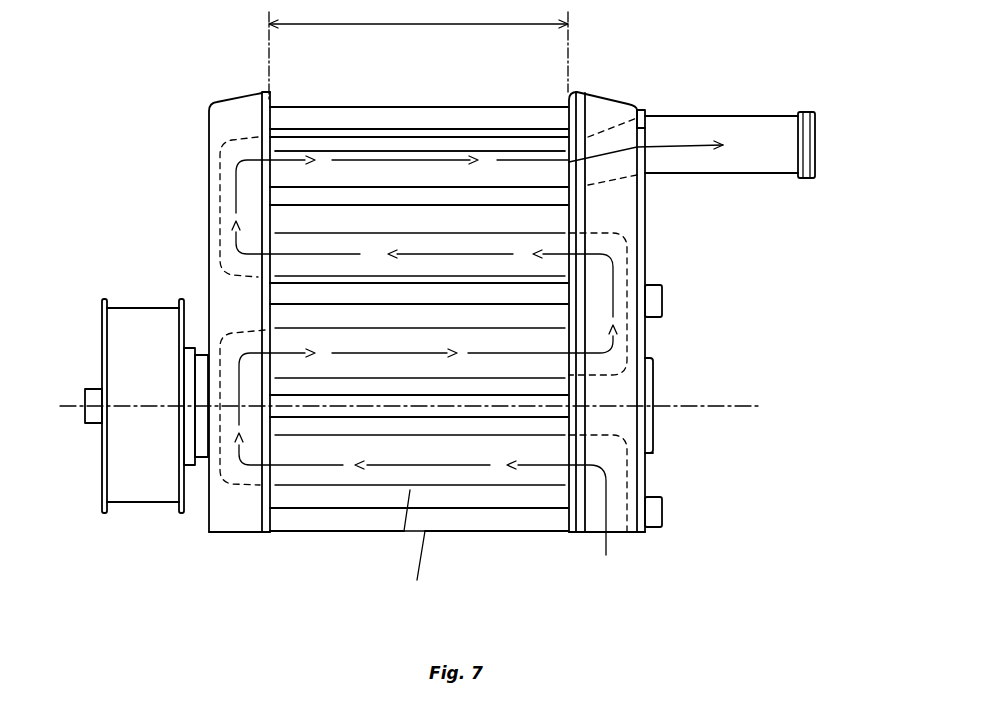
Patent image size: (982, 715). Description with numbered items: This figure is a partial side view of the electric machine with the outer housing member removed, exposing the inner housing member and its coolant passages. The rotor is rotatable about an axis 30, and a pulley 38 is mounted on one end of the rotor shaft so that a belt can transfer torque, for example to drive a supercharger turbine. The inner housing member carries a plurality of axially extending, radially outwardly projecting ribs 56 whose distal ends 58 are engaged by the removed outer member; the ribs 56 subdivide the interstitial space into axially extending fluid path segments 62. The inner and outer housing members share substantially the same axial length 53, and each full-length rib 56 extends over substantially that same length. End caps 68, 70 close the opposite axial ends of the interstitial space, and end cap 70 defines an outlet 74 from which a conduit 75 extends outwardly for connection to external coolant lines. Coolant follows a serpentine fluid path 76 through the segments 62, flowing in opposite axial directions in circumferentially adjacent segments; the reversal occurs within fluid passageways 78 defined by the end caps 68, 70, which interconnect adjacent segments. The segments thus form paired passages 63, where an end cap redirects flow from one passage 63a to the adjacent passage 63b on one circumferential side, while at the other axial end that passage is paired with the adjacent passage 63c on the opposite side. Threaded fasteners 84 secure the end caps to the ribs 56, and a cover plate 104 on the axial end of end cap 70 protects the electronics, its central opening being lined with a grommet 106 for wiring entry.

The axis 30 is at (68, 410).
The pulley 38 is at (145, 507).
The axial length 53 is at (409, 26).
The ribs 56 is at (482, 143).
The distal ends 58 is at (335, 290).
The fluid path segments 62 is at (355, 168).
The paired passages 63 is at (528, 242).
The paired passage 63a is at (282, 337).
The paired passage 63b is at (280, 265).
The adjacent passage 63c is at (327, 478).
The end cap 68 is at (240, 96).
The end cap 70 is at (628, 532).
The outlet 74 is at (616, 128).
The conduit 75 is at (740, 116).
The fluid path 76 is at (236, 172).
The fluid passageways 78 is at (622, 270).
The threaded fasteners 84 is at (662, 297).
The cover plate 104 is at (650, 466).
The grommet 106 is at (653, 388).